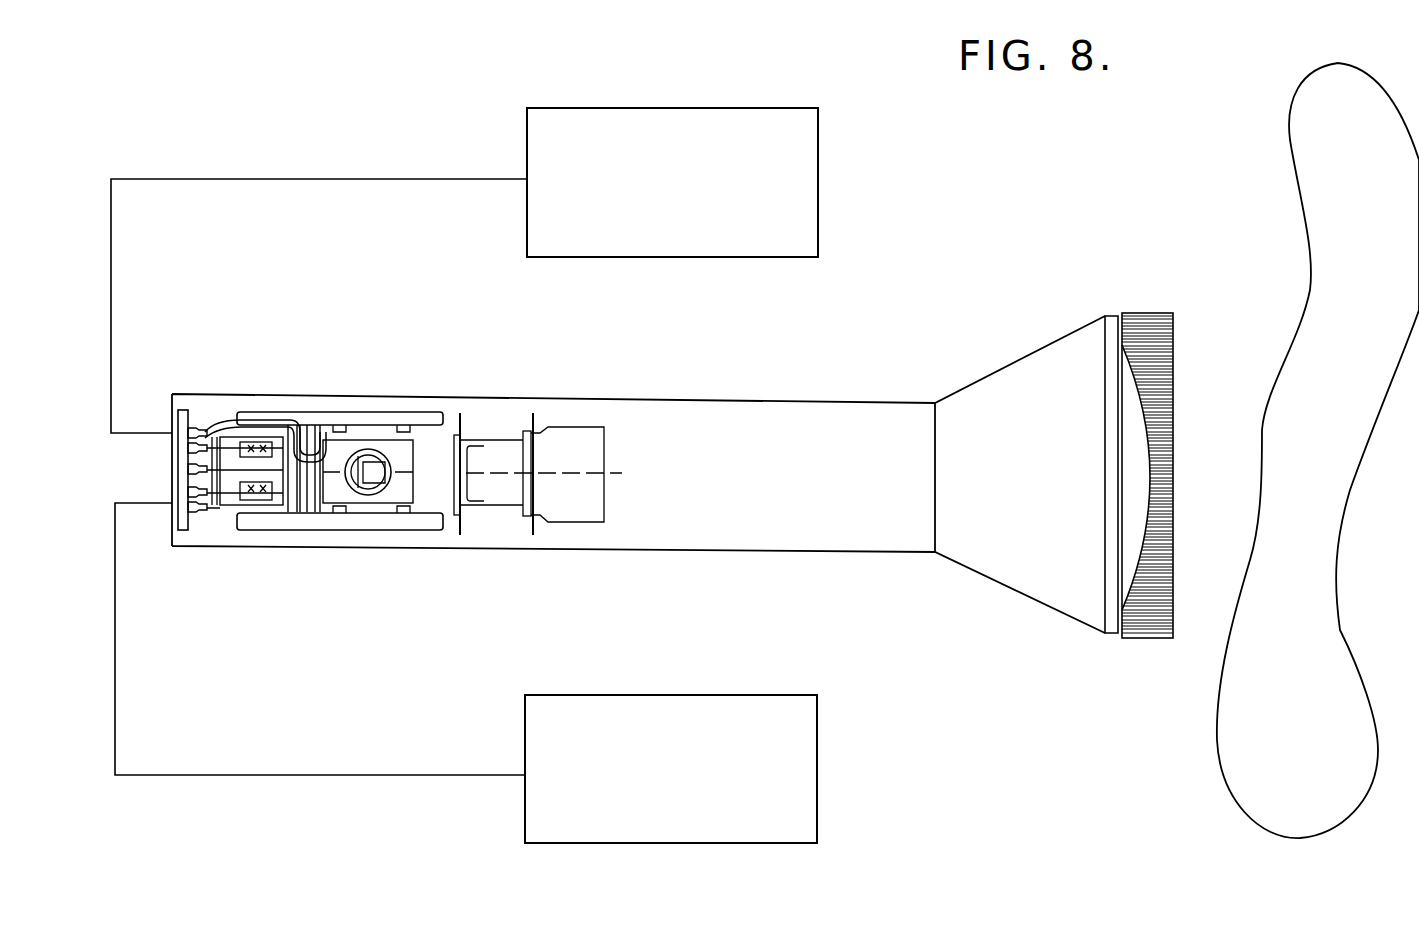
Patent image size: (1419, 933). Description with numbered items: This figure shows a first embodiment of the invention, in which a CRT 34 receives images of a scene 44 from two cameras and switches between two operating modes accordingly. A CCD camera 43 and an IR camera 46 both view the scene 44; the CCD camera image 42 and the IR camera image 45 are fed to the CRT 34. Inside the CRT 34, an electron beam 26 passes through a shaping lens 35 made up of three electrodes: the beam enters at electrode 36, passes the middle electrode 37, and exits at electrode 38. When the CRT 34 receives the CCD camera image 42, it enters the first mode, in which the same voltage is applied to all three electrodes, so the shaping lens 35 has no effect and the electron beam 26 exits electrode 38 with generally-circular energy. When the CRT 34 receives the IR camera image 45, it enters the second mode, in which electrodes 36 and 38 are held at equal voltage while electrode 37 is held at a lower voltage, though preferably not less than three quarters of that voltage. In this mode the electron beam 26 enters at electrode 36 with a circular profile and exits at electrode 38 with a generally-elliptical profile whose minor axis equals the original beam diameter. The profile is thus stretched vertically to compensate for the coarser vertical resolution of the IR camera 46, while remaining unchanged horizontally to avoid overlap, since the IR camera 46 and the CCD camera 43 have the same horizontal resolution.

The electron beam 26 is at (318, 512).
The CRT 34 is at (672, 475).
The shaping lens 35 is at (312, 406).
The electrode 36 is at (290, 432).
The electrode 37 is at (300, 512).
The electrode 38 is at (318, 435).
The CCD camera image 42 is at (265, 179).
The CCD camera 43 is at (690, 240).
The scene 44 is at (1308, 410).
The IR camera image 45 is at (300, 777).
The IR camera 46 is at (688, 826).